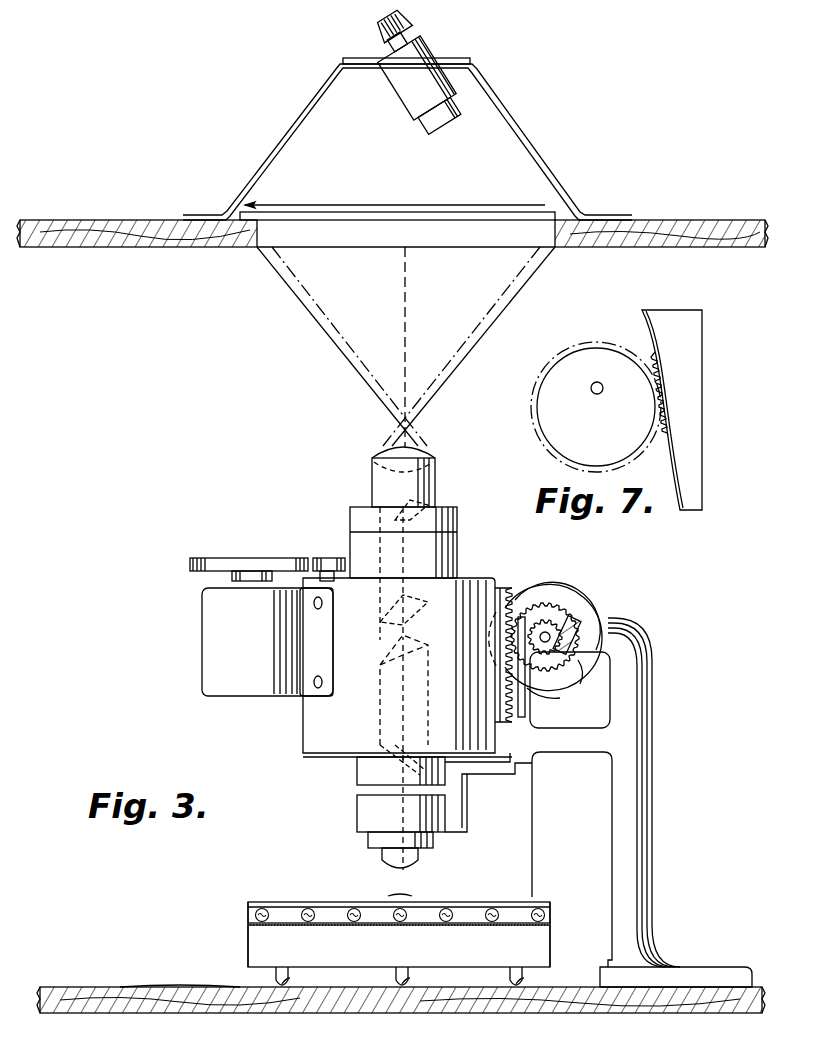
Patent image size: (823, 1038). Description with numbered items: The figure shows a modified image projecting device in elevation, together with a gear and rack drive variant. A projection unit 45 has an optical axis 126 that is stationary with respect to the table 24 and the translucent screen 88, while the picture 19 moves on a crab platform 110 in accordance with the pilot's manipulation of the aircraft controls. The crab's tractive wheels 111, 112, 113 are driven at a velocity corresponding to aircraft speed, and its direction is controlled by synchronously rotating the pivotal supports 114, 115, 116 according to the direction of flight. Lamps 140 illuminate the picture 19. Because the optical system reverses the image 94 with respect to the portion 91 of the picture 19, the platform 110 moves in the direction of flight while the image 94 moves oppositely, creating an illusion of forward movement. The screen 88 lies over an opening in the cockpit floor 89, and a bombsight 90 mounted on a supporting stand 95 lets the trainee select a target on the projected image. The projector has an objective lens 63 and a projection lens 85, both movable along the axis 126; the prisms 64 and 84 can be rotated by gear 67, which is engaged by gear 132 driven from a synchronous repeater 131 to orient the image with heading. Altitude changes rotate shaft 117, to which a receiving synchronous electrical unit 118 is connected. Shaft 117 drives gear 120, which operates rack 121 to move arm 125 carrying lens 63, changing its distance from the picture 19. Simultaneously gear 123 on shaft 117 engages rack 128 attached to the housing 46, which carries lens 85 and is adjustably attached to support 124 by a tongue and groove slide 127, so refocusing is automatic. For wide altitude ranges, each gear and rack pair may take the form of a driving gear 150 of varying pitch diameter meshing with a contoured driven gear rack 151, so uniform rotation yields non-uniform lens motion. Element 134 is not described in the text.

In FIG. 3, the picture 19 is at (285, 901).
In FIG. 3, the table 24 is at (68, 985).
In FIG. 7, the projection unit 45 is at (548, 520).
In FIG. 3, the housing 46 is at (303, 740).
In FIG. 3, the objective lens 63 is at (408, 892).
In FIG. 3, the prism 64 is at (388, 722).
In FIG. 3, the gear 67 is at (328, 557).
In FIG. 3, the prism 84 is at (385, 608).
In FIG. 3, the projection lens 85 is at (425, 454).
In FIG. 3, the translucent screen 88 is at (328, 207).
In FIG. 3, the floor 89 is at (665, 218).
In FIG. 3, the bombsight 90 is at (385, 95).
In FIG. 3, the portion of the picture 91 is at (392, 894).
In FIG. 3, the image 94 is at (414, 206).
In FIG. 3, the supporting stand 95 is at (470, 64).
In FIG. 3, the crab platform 110 is at (250, 944).
In FIG. 3, the tractive wheel 111 is at (275, 978).
In FIG. 3, the tractive wheel 112 is at (395, 978).
In FIG. 3, the tractive wheel 113 is at (509, 978).
In FIG. 3, the pivotal support 114 is at (290, 980).
In FIG. 3, the pivotal support 115 is at (410, 980).
In FIG. 3, the pivotal support 116 is at (524, 980).
In FIG. 3, the shaft 117 is at (552, 631).
In FIG. 3, the receiving synchronous electrical unit 118 is at (575, 580).
In FIG. 3, the gear 120 is at (558, 650).
In FIG. 3, the rack 121 is at (540, 695).
In FIG. 3, the gear 123 is at (575, 665).
In FIG. 3, the support 124 is at (612, 845).
In FIG. 3, the arm 125 is at (483, 777).
In FIG. 3, the optical axis 126 is at (416, 367).
In FIG. 3, the tongue and groove slide 127 is at (507, 596).
In FIG. 3, the rack 128 is at (516, 722).
In FIG. 3, the synchronous repeater 131 is at (210, 650).
In FIG. 3, the gear 132 is at (225, 557).
In FIG. 3, the shim 134 is at (185, 985).
In FIG. 3, the lamps 140 is at (500, 905).
In FIG. 7, the driving gear 150 is at (568, 432).
In FIG. 7, the driven gear rack 151 is at (692, 376).